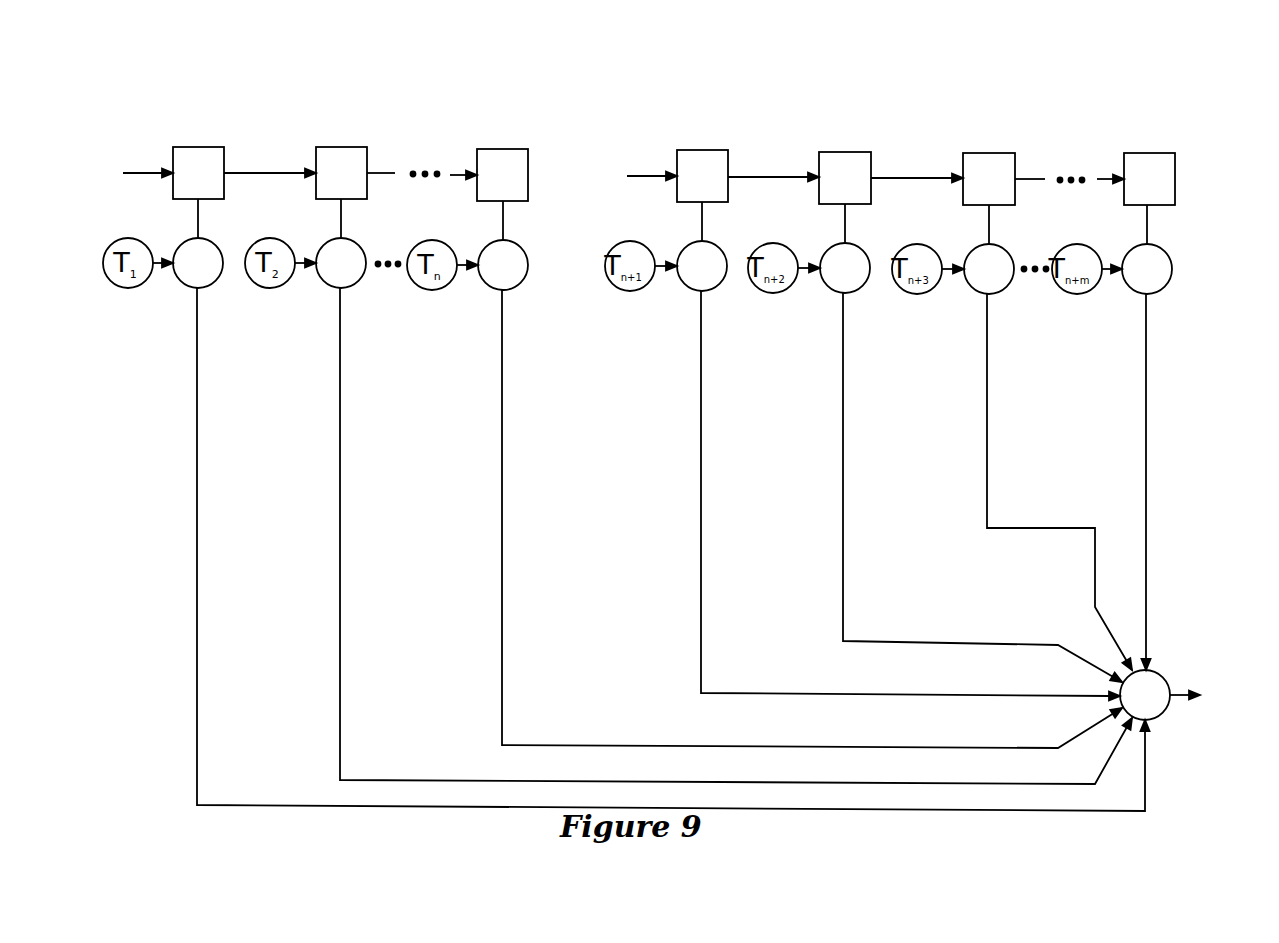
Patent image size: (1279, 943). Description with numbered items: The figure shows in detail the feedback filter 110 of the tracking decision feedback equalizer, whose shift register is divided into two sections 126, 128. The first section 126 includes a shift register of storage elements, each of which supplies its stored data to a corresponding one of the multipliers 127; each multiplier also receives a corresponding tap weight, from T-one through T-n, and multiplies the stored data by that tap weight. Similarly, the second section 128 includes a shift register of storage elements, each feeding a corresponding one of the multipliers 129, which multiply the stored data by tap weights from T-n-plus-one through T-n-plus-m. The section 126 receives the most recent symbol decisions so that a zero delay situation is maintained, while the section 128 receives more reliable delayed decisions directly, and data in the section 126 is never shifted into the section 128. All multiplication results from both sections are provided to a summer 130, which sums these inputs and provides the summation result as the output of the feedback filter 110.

The feedback filter 110 is at (1127, 69).
The section 126 is at (567, 93).
The multipliers 127 is at (661, 505).
The section 128 is at (1178, 96).
The multipliers 129 is at (950, 451).
The summer 130 is at (1163, 674).